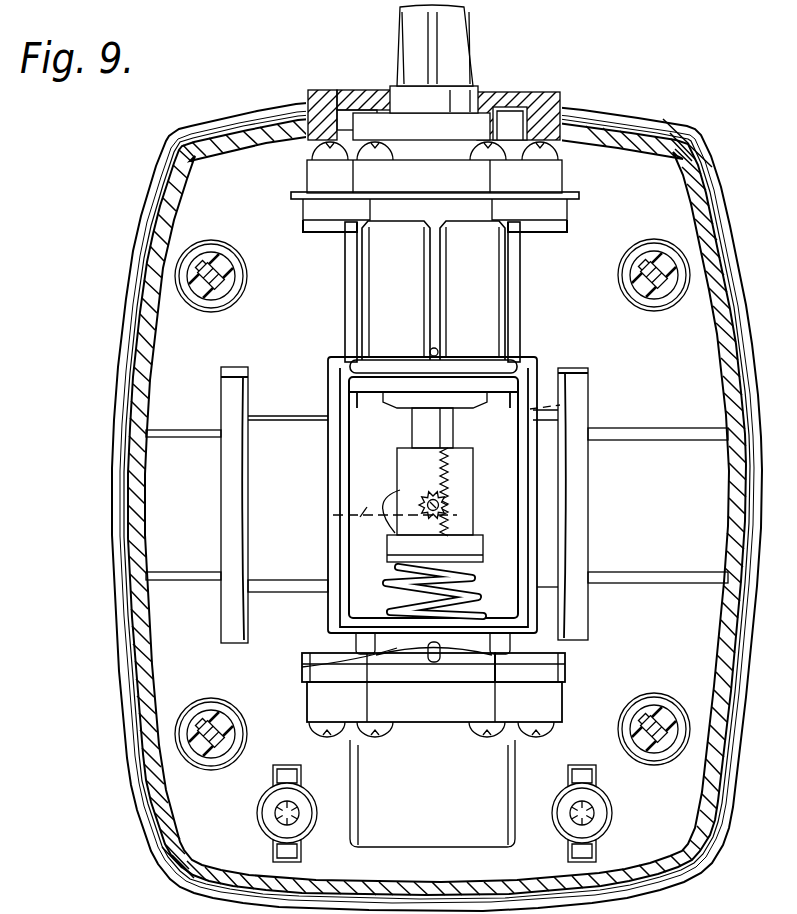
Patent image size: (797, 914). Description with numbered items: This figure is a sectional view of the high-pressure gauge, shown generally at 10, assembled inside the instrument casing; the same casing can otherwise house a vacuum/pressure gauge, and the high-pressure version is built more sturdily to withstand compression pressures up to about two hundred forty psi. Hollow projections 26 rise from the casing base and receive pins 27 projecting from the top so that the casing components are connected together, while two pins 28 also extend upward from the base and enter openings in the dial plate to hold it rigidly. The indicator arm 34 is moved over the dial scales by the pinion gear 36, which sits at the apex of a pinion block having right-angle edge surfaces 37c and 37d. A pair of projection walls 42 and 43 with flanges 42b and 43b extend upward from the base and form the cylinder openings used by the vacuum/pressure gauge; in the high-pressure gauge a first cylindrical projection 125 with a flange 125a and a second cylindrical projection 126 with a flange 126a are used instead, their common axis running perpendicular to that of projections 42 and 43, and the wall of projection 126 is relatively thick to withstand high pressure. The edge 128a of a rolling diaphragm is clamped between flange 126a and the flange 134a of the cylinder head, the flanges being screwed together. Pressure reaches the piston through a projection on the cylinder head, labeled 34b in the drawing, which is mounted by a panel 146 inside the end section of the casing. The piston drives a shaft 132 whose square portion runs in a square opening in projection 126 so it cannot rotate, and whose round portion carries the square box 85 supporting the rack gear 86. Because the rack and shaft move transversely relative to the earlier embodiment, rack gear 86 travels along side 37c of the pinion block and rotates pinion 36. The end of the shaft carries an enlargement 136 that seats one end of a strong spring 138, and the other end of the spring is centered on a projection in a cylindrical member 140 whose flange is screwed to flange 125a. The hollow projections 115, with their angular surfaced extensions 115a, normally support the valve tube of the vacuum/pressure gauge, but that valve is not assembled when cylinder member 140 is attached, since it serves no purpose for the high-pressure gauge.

The drive unit 10 is at (422, 28).
The hollow projections 26 is at (243, 261).
The pins 27 is at (234, 282).
The pins 28 is at (430, 350).
The indicator arm 34 is at (498, 117).
The stem 34b is at (458, 33).
The pinion gear 36 is at (346, 618).
The right angle edge surface 37c is at (560, 403).
The right angle edge surface 37d is at (430, 513).
The projection wall 42 is at (547, 510).
The flange 42b is at (575, 372).
The projection wall 43 is at (260, 452).
The flange 43b is at (238, 369).
The square box structure 85 is at (410, 460).
The rack gear 86 is at (460, 517).
The hollow projections 115 is at (258, 812).
The angular surfaced extensions 115a is at (303, 739).
The first cylindrical projection 125 is at (302, 668).
The flange 125a is at (565, 665).
The second cylindrical projection 126 is at (473, 290).
The flange 126a is at (318, 210).
The edge of diaphragm 128a is at (578, 198).
The shaft 132 is at (447, 432).
The flange 134a is at (552, 173).
The enlargement 136 is at (473, 548).
The spring 138 is at (480, 598).
The cylindrical member 140 is at (385, 838).
The panel 146 is at (311, 94).